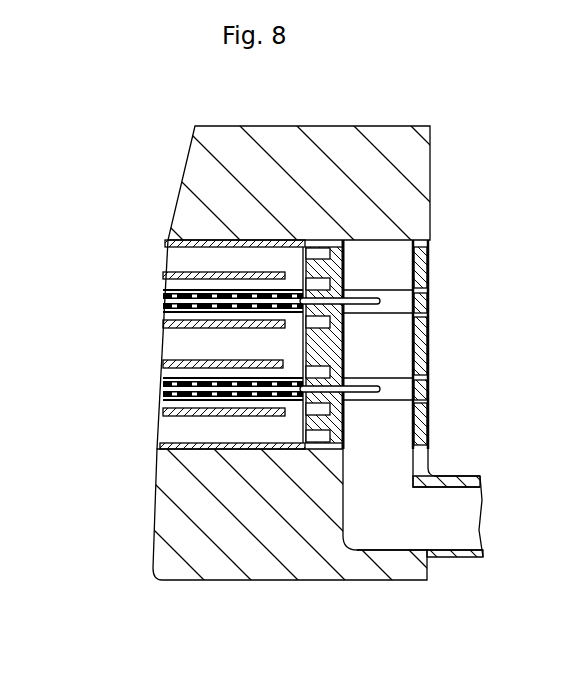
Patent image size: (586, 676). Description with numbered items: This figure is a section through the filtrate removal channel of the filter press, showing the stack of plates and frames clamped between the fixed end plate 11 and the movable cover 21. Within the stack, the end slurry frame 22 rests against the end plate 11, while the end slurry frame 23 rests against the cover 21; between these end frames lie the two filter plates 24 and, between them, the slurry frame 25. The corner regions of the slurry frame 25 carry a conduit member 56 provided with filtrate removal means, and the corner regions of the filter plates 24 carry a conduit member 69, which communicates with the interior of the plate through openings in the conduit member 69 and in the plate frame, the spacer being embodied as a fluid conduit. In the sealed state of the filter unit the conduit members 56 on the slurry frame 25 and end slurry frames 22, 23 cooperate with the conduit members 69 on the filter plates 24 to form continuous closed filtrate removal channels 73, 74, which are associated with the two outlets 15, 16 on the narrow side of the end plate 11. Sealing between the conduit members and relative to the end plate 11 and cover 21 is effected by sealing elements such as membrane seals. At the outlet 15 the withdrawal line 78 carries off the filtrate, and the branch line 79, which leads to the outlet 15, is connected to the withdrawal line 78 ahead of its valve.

The movable cover 21 is at (215, 178).
The fixed end plate 11 is at (195, 528).
The end slurry frame 23 is at (158, 251).
The end slurry frame 22 is at (148, 435).
The filter plate 24 is at (155, 297).
The slurry frame 25 is at (163, 347).
The conduit member 56 is at (424, 264).
The conduit member 69 is at (425, 305).
The filtrate removal channel 73 is at (460, 363).
The filtrate removal channel 74 is at (447, 357).
The outlet 15 is at (428, 566).
The outlet 16 is at (430, 523).
The withdrawal line 78 is at (499, 571).
The branch line 79 is at (475, 555).